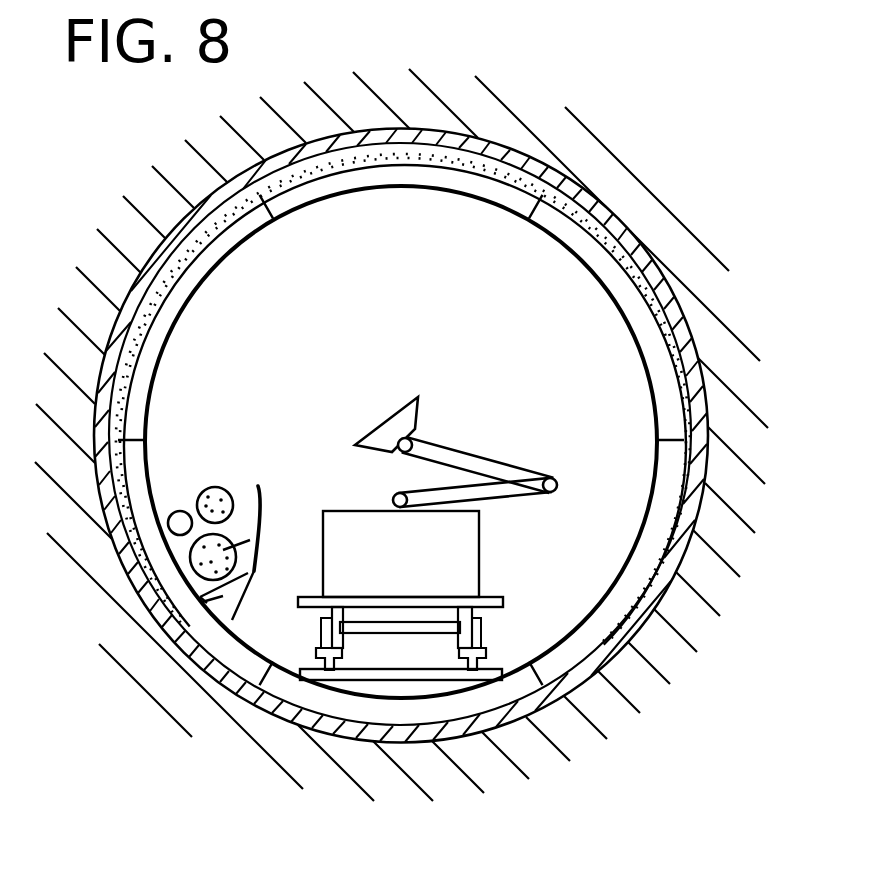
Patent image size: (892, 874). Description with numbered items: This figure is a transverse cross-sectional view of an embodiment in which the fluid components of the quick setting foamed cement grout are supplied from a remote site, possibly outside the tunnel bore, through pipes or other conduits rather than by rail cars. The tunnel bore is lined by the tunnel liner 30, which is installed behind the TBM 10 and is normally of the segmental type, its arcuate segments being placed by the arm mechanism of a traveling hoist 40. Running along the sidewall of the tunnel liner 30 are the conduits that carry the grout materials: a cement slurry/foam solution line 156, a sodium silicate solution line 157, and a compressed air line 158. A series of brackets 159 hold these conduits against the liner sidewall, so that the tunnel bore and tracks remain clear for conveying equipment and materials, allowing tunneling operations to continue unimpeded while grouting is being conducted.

The TBM 10 is at (160, 196).
The tunnel liner 30 is at (431, 207).
The traveling hoist 40 is at (452, 557).
The cement slurry/foam solution line 156 is at (259, 485).
The sodium silicate solution line 157 is at (217, 487).
The compressed air line 158 is at (181, 511).
The brackets 159 is at (207, 603).